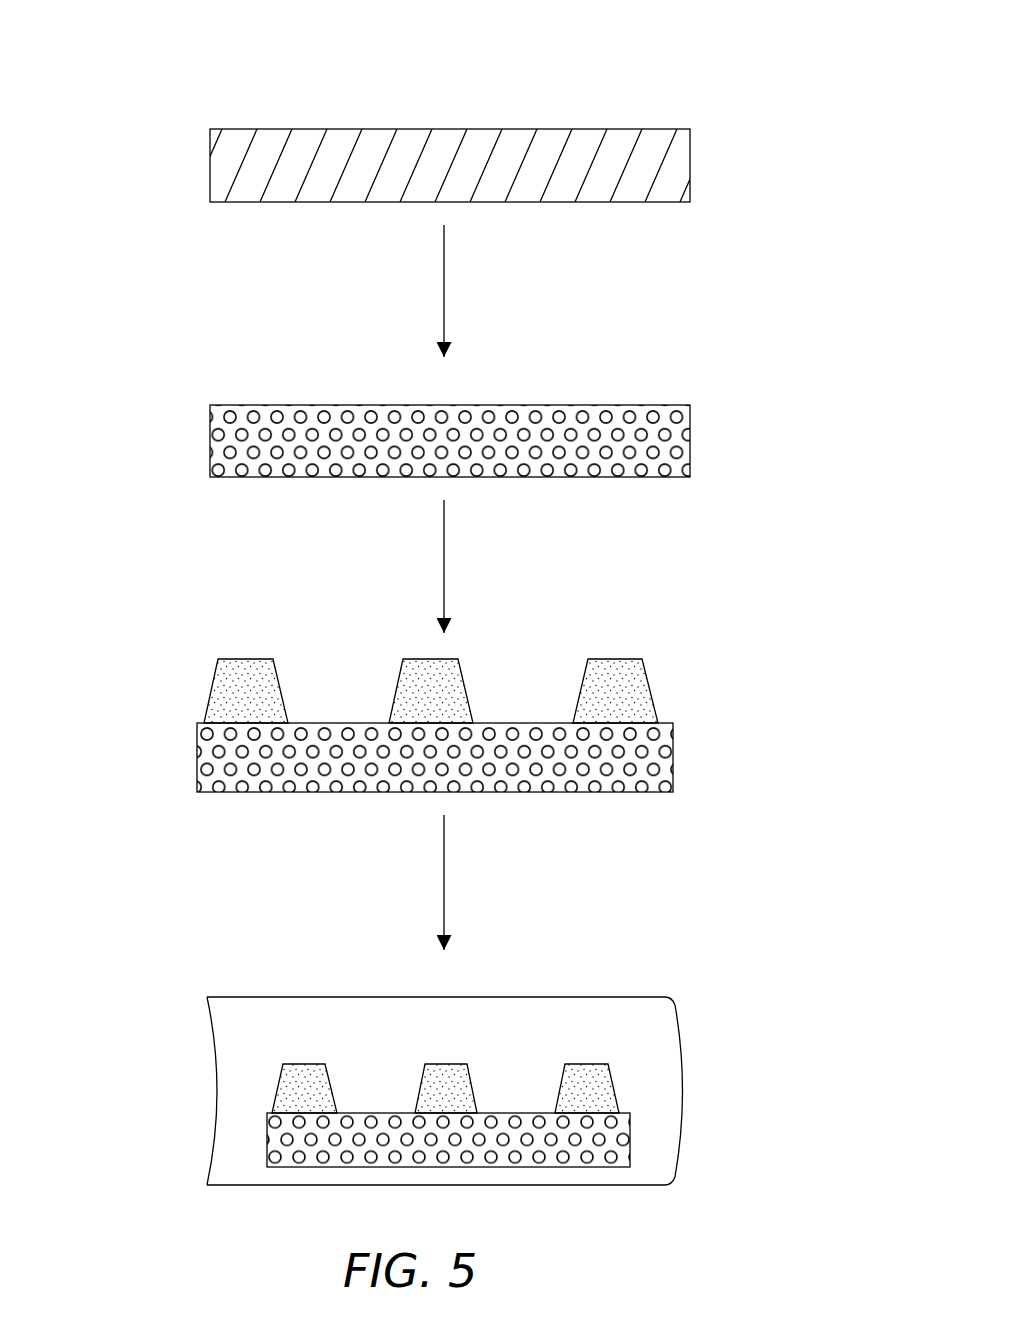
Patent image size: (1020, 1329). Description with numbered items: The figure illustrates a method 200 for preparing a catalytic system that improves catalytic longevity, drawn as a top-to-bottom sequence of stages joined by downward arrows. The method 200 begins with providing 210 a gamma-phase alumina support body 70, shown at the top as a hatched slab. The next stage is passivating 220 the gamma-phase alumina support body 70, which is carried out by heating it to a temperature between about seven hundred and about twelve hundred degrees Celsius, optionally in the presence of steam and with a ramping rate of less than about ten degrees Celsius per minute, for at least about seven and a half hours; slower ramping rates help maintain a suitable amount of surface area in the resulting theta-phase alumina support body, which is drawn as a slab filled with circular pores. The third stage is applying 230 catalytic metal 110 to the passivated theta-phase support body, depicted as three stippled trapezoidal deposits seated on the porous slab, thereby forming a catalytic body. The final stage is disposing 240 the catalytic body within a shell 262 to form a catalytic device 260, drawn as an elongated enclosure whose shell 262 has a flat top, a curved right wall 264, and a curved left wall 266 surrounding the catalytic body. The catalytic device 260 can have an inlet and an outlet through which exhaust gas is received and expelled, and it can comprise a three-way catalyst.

The method 200 is at (740, 73).
The providing 210 is at (429, 165).
The gamma-phase alumina support body 70 is at (690, 162).
The passivating 220 is at (433, 440).
The applying 230 is at (403, 679).
The catalytic metal 110 is at (278, 680).
The disposing 240 is at (408, 1051).
The catalytic device 260 is at (447, 1051).
The shell 262 is at (588, 997).
The right side wall 264 is at (683, 1103).
The left side wall 266 is at (213, 1092).